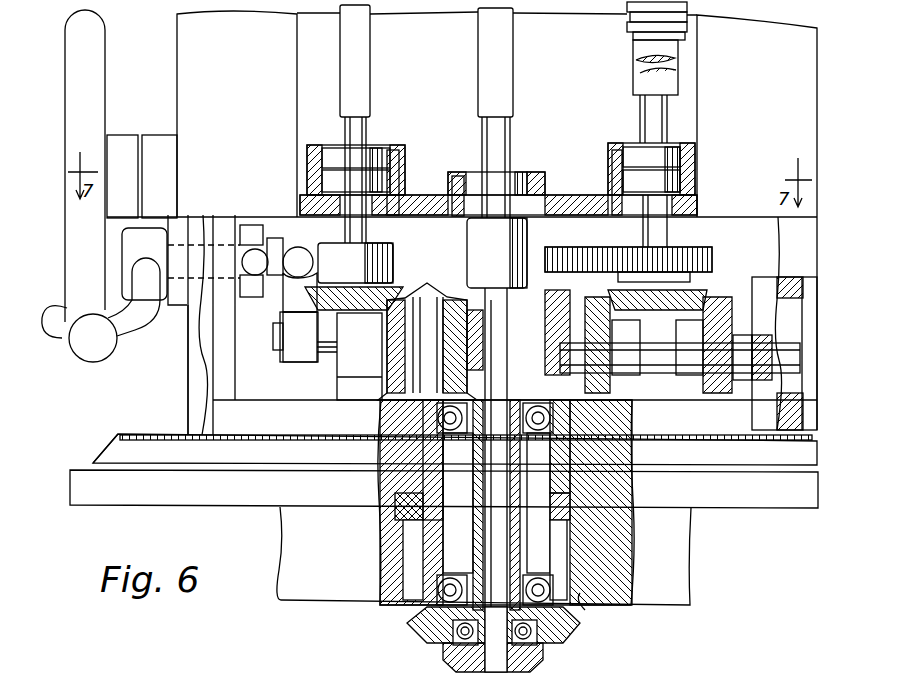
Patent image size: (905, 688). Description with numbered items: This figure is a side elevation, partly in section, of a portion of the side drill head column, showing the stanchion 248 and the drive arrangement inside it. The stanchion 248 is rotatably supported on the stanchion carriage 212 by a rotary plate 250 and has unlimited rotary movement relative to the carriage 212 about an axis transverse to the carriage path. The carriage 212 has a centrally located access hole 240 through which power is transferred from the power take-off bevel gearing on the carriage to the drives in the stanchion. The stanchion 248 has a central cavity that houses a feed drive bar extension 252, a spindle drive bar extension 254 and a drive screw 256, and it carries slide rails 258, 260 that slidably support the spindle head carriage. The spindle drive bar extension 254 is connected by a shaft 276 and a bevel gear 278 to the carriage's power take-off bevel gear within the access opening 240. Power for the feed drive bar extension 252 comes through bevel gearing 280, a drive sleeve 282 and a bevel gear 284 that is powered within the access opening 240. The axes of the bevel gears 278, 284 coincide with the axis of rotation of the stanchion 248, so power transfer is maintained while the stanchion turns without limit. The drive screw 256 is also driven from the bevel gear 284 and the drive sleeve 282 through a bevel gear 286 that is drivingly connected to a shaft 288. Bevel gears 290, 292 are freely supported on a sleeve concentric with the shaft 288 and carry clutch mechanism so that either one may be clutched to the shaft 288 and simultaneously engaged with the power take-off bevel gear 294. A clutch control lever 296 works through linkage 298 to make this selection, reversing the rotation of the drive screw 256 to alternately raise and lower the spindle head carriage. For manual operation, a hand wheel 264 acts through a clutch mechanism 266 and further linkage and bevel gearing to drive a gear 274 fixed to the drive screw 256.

The stanchion carriage 212 is at (680, 565).
The access hole 240 is at (582, 596).
The stanchion 248 is at (208, 380).
The rotary plate 250 is at (128, 490).
The feed drive bar extension 252 is at (357, 103).
The spindle drive bar extension 254 is at (497, 110).
The drive screw 256 is at (667, 132).
The slide rail 258 is at (192, 38).
The slide rail 260 is at (762, 28).
The hand wheel 264 is at (88, 95).
The clutch mechanism 266 is at (155, 140).
The gear 274 is at (690, 255).
The shaft 276 is at (525, 478).
The bevel gear 278 is at (540, 655).
The bevel gearing 280 is at (430, 285).
The drive sleeve 282 is at (470, 468).
The bevel gear 284 is at (440, 628).
The bevel gear 286 is at (557, 310).
The shaft 288 is at (600, 403).
The bevel gear 290 is at (608, 345).
The bevel gear 292 is at (705, 350).
The power take-off bevel gear 294 is at (700, 300).
The clutch control lever 296 is at (133, 325).
The linkage 298 is at (288, 297).